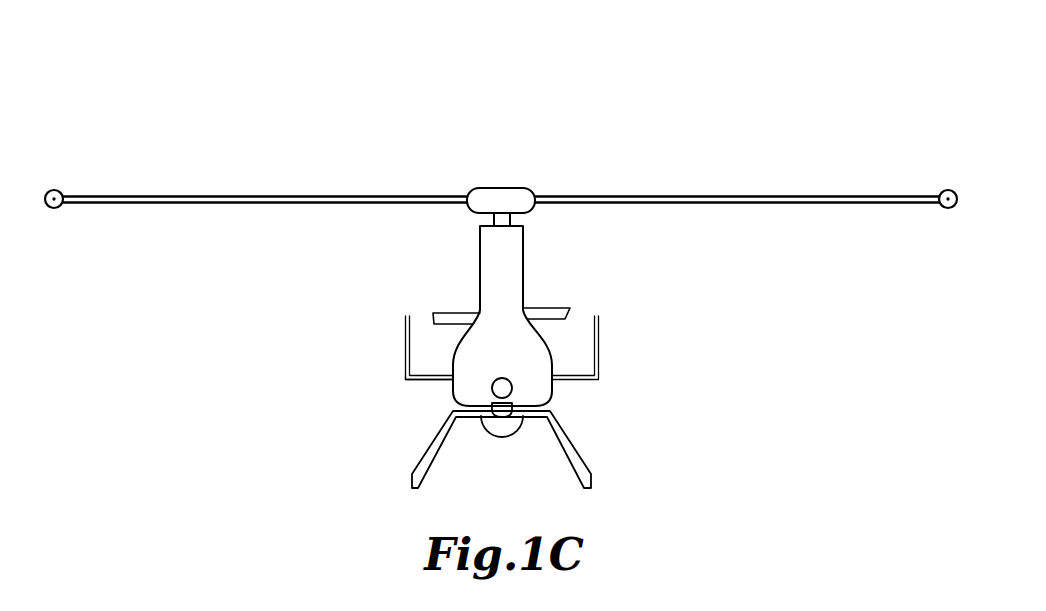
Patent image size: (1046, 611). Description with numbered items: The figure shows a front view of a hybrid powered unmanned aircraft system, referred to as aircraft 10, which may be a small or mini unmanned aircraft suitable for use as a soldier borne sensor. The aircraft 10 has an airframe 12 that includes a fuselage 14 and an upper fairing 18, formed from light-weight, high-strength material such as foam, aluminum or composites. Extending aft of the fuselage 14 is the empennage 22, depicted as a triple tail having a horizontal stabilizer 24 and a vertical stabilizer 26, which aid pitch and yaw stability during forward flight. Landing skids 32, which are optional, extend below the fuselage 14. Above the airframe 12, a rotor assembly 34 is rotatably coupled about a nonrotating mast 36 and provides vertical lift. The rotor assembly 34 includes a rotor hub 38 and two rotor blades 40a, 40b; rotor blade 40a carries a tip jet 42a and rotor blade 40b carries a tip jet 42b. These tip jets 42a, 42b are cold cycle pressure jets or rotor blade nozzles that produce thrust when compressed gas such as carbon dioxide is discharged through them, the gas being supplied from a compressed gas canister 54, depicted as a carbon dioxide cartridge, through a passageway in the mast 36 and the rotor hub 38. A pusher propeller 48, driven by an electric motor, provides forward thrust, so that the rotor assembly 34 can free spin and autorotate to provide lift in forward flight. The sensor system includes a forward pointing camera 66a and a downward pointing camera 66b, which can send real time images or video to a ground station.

The aircraft 10 is at (582, 112).
The airframe 12 is at (524, 283).
The fuselage 14 is at (549, 357).
The upper fairing 18 is at (525, 243).
The empennage 22 is at (599, 378).
The horizontal stabilizer 24 is at (420, 378).
The vertical stabilizer 26 is at (404, 351).
The landing skids 32 is at (578, 453).
The rotor assembly 34 is at (355, 196).
The mast 36 is at (492, 222).
The rotor hub 38 is at (497, 194).
The rotor blade 40a is at (808, 195).
The rotor blade 40b is at (129, 195).
The tip jet 42a is at (950, 190).
The tip jet 42b is at (56, 190).
The pusher propeller 48 is at (569, 312).
The compressed gas canister 54 is at (501, 438).
The forward pointing camera 66a is at (512, 388).
The downward pointing camera 66b is at (484, 423).